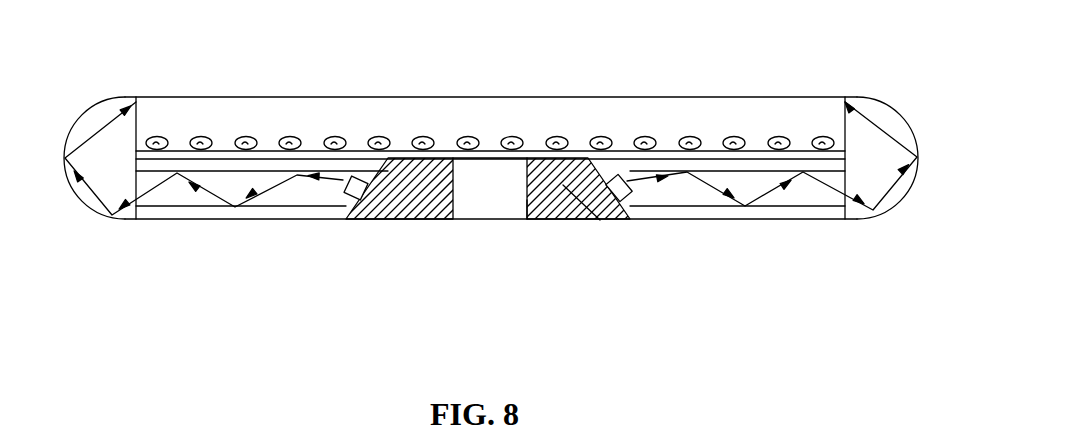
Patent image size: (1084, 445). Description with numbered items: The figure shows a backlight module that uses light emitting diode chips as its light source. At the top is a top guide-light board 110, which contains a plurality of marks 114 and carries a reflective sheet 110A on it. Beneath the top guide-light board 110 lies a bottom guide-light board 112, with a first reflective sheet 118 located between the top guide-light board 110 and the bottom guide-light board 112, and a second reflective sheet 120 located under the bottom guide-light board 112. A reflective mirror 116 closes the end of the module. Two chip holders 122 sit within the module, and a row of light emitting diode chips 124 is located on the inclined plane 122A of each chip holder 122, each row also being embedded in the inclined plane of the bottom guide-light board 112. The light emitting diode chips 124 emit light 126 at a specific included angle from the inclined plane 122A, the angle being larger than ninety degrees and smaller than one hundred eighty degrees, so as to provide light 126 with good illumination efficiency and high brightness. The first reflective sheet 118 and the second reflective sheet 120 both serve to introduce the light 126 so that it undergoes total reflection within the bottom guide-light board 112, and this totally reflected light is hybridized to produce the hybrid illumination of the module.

The top guide-light board 110 is at (443, 115).
The reflective sheet 110A is at (313, 152).
The bottom guide-light board 112 is at (705, 193).
The marks 114 is at (593, 140).
The reflective mirror 116 is at (917, 126).
The first reflective sheet 118 is at (797, 161).
The second reflective sheet 120 is at (810, 212).
The chip holder 122 is at (522, 188).
The inclined plane 122A is at (530, 216).
The light emitting diode chip 124 is at (600, 222).
The light 126 is at (645, 177).